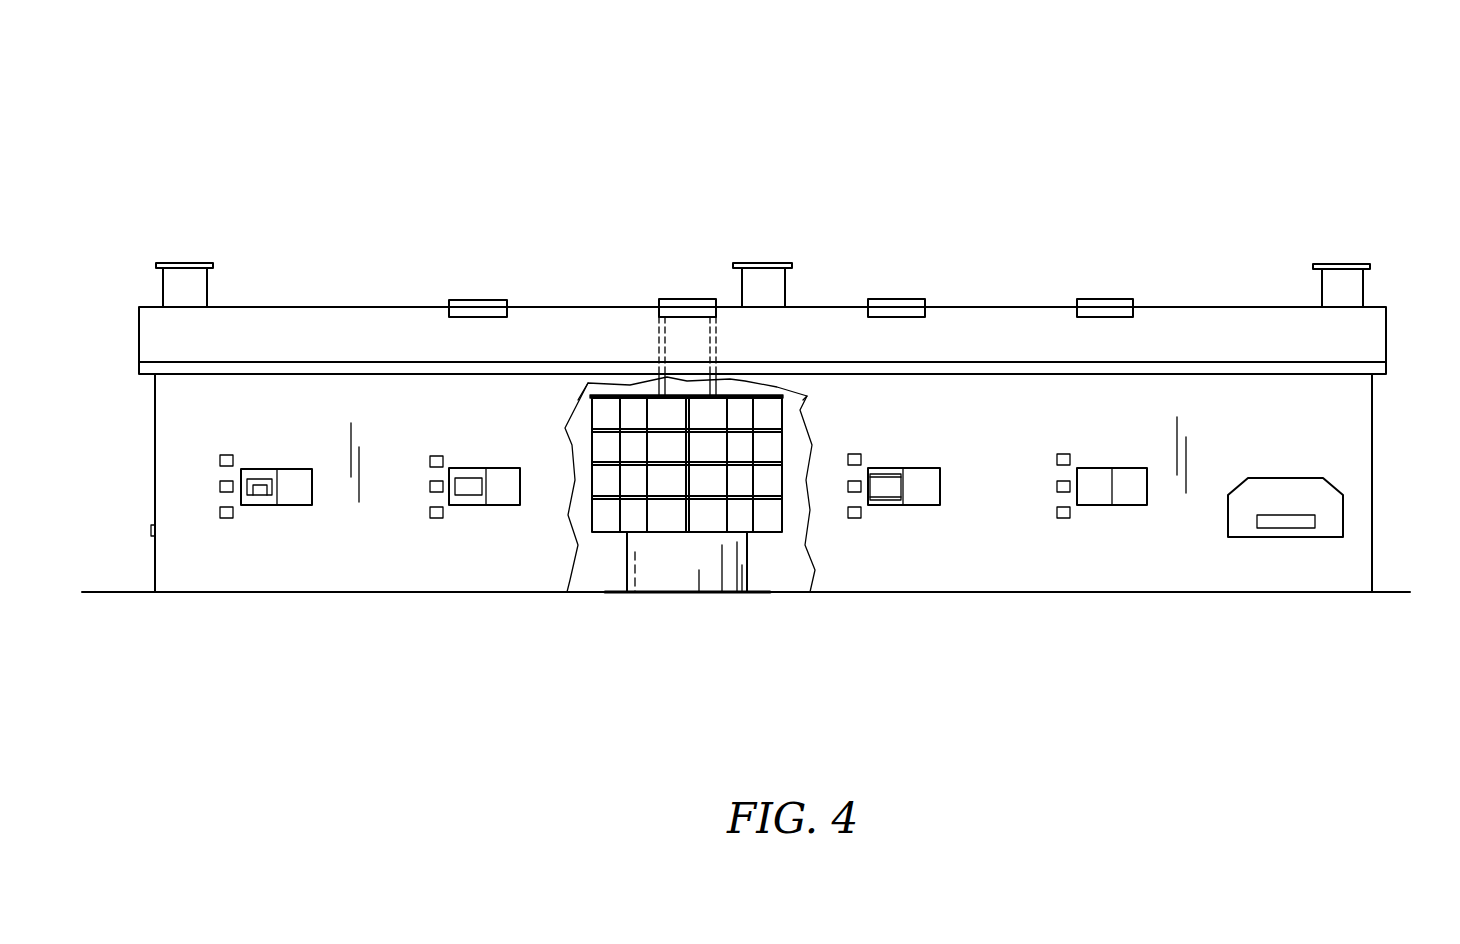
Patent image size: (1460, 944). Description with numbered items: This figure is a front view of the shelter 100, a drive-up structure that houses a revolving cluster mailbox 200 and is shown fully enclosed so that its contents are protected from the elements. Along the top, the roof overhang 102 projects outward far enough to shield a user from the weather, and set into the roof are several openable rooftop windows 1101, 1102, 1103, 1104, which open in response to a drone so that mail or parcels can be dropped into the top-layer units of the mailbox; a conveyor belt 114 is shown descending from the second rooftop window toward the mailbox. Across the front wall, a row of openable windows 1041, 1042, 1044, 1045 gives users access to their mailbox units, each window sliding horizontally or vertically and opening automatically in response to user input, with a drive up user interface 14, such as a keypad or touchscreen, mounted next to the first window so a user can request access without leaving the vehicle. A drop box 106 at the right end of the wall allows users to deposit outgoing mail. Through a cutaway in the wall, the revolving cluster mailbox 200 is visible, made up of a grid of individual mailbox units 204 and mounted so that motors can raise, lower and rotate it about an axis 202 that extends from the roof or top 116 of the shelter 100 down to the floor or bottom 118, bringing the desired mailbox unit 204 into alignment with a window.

The shelter 100 is at (295, 172).
The roof overhang 102 is at (1376, 371).
The drive up user interface 14 is at (220, 487).
The openable window 1041 is at (295, 494).
The openable window 1042 is at (502, 495).
The openable window 1044 is at (922, 495).
The openable window 1045 is at (1125, 494).
The drop box 106 is at (1330, 510).
The openable rooftop window 1101 is at (478, 307).
The openable rooftop window 1102 is at (685, 305).
The openable rooftop window 1103 is at (893, 306).
The openable rooftop window 1104 is at (1103, 306).
The conveyor belt 114 is at (655, 333).
The roof or top 116 is at (800, 368).
The floor or bottom 118 is at (797, 583).
The revolving cluster mailbox 200 is at (656, 548).
The axis 202 is at (695, 542).
The mailbox unit 204 is at (663, 515).